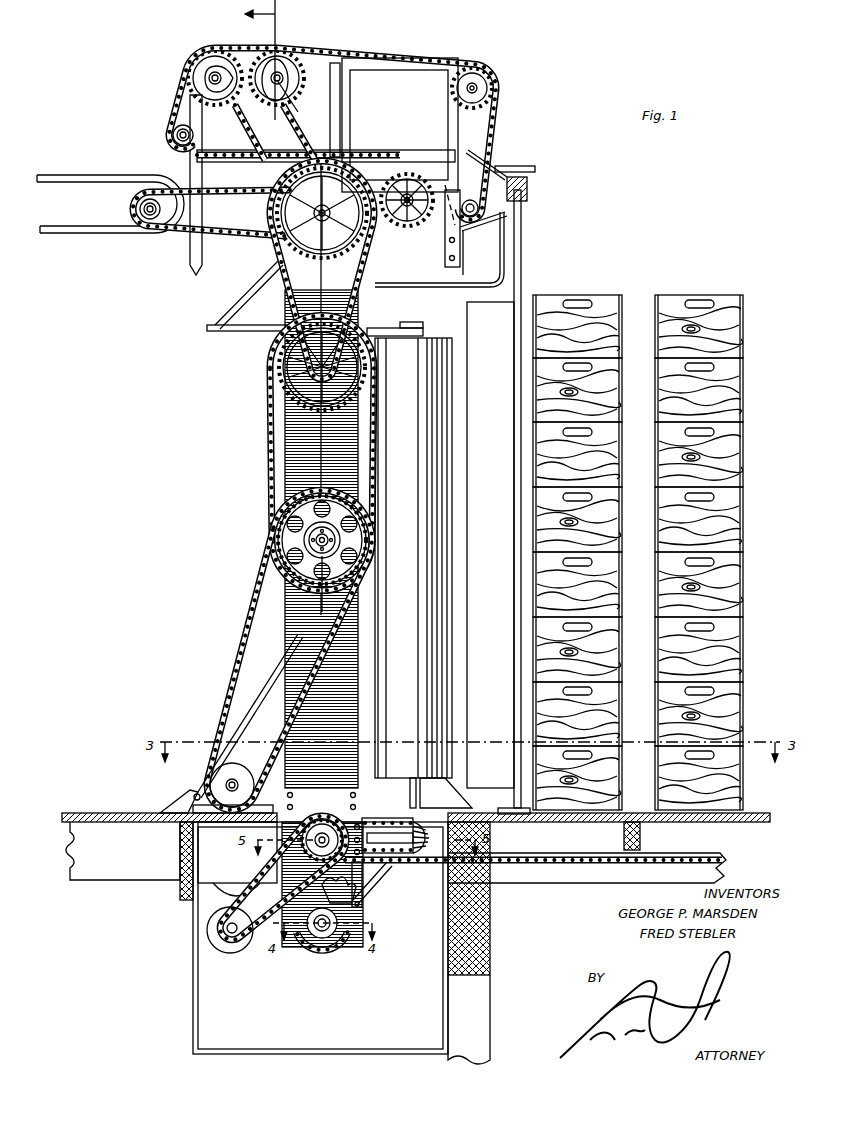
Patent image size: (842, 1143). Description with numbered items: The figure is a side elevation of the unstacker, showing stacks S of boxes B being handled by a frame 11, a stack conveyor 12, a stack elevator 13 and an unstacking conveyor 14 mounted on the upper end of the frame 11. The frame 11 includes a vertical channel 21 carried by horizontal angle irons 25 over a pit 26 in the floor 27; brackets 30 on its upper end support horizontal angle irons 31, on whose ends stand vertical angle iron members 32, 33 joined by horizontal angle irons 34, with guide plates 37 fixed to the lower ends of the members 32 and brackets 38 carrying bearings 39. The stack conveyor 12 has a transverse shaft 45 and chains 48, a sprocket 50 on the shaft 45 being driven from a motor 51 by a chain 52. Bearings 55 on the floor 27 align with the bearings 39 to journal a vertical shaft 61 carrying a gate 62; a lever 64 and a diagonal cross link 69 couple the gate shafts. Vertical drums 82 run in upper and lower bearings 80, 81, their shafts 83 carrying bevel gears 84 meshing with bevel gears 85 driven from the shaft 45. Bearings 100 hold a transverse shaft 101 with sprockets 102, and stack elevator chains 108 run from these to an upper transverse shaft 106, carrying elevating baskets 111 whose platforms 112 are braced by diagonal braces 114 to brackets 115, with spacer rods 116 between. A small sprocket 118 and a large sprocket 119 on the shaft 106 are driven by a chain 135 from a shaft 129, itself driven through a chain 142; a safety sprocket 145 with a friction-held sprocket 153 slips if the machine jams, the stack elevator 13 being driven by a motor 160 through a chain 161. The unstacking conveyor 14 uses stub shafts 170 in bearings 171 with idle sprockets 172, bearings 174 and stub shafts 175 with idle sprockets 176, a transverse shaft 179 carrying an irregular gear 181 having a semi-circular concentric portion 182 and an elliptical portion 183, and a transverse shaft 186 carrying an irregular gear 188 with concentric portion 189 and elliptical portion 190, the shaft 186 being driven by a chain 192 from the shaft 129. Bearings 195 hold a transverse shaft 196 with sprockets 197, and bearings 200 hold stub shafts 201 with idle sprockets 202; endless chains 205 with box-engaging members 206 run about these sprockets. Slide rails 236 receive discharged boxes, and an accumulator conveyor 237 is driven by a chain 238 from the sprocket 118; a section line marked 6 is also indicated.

The hub shaft 6 is at (305, 605).
The frame 11 is at (273, 455).
The stack conveyor 12 is at (632, 812).
The stack elevator 13 is at (350, 948).
The unstacking conveyor 14 is at (500, 72).
The channel 21 is at (283, 630).
The horizontal angle irons 25 is at (185, 796).
The pit 26 is at (195, 995).
The floor 27 is at (90, 812).
The brackets 30 is at (290, 282).
The horizontal angle irons 31 is at (236, 185).
The angle iron members 32 is at (452, 126).
The angle iron members 33 is at (196, 160).
The horizontal angle irons 34 is at (412, 65).
The guide plates 37 is at (505, 252).
The brackets 38 is at (486, 155).
The bearings 39 is at (528, 188).
The transverse shaft 45 is at (328, 826).
The chains 48 is at (748, 812).
The sprocket 50 is at (318, 822).
The motor 51 is at (232, 950).
The chain 52 is at (272, 868).
The bearings 55 is at (512, 800).
The vertical shaft 61 is at (522, 262).
The gate 62 is at (490, 545).
The lever 64 is at (528, 178).
The diagonal cross link 69 is at (517, 158).
The upper bearings 80 is at (384, 328).
The lower bearings 81 is at (400, 853).
The vertical drums 82 is at (438, 340).
The shafts 83 is at (410, 795).
The bevel gears 84 is at (446, 793).
The bevel gears 85 is at (422, 852).
The bearings 100 is at (320, 933).
The transverse shaft 101 is at (326, 928).
The sprockets 102 is at (339, 885).
The transverse shaft 106 is at (345, 205).
The stack elevator chains 108 is at (298, 952).
The elevating baskets 111 is at (238, 294).
The platform 112 is at (245, 331).
The diagonal braces 114 is at (275, 265).
The brackets 115 is at (362, 882).
The spacer rods 116 is at (362, 894).
The small sprocket 118 is at (305, 212).
The large sprocket 119 is at (324, 220).
The shaft 129 is at (285, 380).
The chain 135 is at (360, 278).
The chain 142 is at (270, 418).
The safety sprocket 145 is at (298, 541).
The sprocket 153 is at (300, 506).
The motor 160 is at (248, 780).
The chain 161 is at (246, 602).
The stub shafts 170 is at (410, 196).
The bearings 171 is at (396, 190).
The idle sprockets 172 is at (402, 226).
The bearings 174 is at (190, 139).
The stub shafts 175 is at (175, 140).
The idle sprockets 176 is at (172, 130).
The transverse shaft 179 is at (209, 79).
The irregularly shaped gear 181 is at (213, 50).
The semi-circular concentric portion 182 is at (190, 68).
The elliptical portion 183 is at (219, 93).
The transverse shaft 186 is at (291, 102).
The irregular gear 188 is at (290, 50).
The semi-circular concentric portion 189 is at (300, 55).
The elliptical portion 190 is at (264, 65).
The chain 192 is at (318, 121).
The bearings 195 is at (474, 78).
The transverse shaft 196 is at (466, 90).
The sprockets 197 is at (482, 92).
The bearings 200 is at (461, 236).
The stub shafts 201 is at (471, 200).
The idle sprockets 202 is at (508, 214).
The endless chains 205 is at (494, 150).
The box-engaging members 206 is at (352, 52).
The slide rails 236 is at (211, 213).
The accumulator conveyor 237 is at (100, 172).
The chain 238 is at (244, 238).
The stack S is at (652, 535).
The box B is at (735, 358).